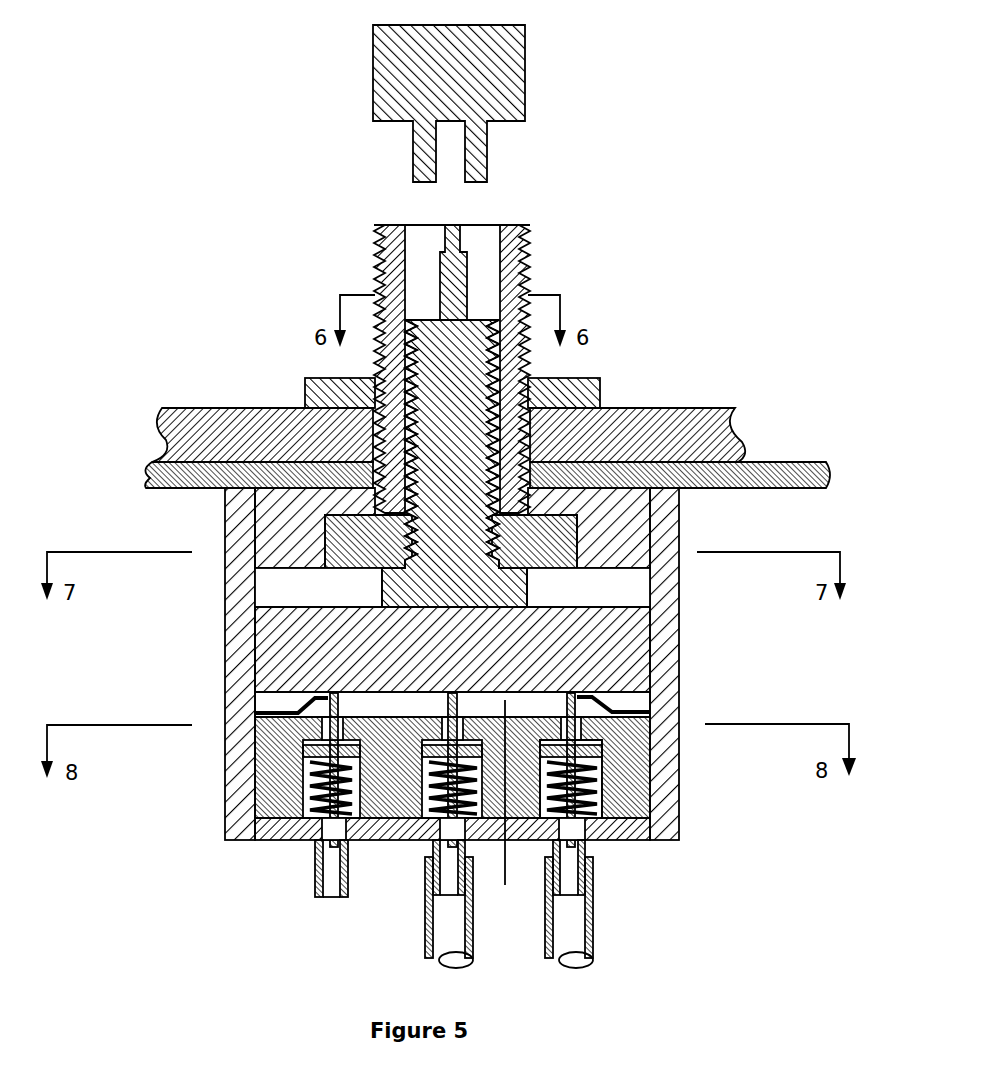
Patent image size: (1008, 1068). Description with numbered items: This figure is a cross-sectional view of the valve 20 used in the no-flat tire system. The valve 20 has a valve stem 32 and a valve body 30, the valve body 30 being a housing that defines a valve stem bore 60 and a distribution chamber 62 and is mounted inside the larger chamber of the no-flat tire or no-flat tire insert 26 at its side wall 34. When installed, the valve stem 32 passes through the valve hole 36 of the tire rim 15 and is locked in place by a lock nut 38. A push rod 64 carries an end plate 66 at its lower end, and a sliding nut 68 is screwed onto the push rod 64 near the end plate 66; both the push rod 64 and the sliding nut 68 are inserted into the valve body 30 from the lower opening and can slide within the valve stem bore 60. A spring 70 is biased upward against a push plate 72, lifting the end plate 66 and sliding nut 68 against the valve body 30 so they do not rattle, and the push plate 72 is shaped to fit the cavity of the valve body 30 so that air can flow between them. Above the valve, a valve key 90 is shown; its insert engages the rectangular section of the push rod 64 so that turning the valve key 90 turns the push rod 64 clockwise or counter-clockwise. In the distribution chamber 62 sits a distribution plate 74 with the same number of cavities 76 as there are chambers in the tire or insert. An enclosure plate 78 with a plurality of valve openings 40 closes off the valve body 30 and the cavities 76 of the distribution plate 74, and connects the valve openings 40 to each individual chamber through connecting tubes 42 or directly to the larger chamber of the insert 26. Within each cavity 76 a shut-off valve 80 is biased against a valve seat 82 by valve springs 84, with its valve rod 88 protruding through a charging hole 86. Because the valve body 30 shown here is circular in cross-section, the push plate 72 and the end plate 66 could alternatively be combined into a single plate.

The valve key 90 is at (525, 70).
The valve stem bore 60 is at (410, 236).
The push rod 64 is at (465, 262).
The valve stem 32 is at (530, 290).
The valve 20 is at (656, 286).
The lock nut 38 is at (600, 378).
The valve hole 36 is at (545, 425).
The tire rim 15 is at (172, 436).
The side wall 34 is at (170, 490).
The sliding nut 68 is at (578, 548).
The end plate 66 is at (650, 585).
The push plate 72 is at (255, 645).
The valve body 30 is at (679, 657).
The charging hole 86 is at (580, 712).
The spring 70 is at (655, 702).
The valve rod 88 is at (327, 715).
The valve seat 82 is at (300, 747).
The shut-off valve 80 is at (600, 757).
The valve springs 84 is at (312, 815).
The distribution plate 74 is at (648, 800).
The cavities 76 is at (592, 797).
The enclosure plate 78 is at (295, 845).
The distribution chamber 62 is at (505, 808).
The valve openings 40 is at (330, 897).
The no-flat tire insert 26 is at (391, 915).
The connecting tubes 42 is at (594, 940).